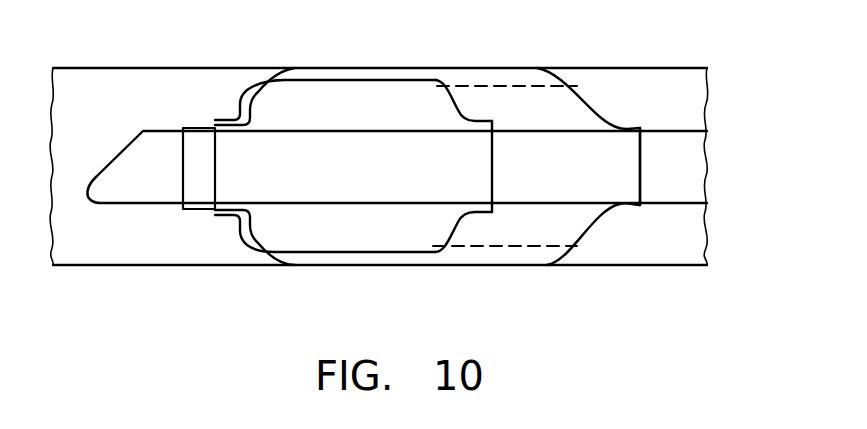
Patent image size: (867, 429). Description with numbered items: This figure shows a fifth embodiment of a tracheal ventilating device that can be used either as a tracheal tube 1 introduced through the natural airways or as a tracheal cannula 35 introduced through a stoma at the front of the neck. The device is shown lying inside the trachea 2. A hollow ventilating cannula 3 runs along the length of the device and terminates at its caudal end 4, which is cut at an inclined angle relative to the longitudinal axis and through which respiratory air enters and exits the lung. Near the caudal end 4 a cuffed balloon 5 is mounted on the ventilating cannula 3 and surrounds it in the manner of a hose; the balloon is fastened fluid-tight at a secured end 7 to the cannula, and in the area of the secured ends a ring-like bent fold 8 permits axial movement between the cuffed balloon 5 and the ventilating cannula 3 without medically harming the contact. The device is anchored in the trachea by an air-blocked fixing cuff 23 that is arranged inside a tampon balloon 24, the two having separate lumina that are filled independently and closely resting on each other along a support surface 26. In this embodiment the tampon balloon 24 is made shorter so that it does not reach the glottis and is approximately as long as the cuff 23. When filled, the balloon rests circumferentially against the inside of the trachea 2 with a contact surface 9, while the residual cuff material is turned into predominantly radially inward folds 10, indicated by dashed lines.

The tracheal tube 1 is at (663, 112).
The tracheal cannula 35 is at (635, 101).
The trachea 2 is at (380, 68).
The ventilating cannula 3 is at (680, 173).
The caudal end 4 is at (148, 192).
The cuffed balloon 5 is at (588, 142).
The tampon balloon 24 is at (564, 108).
The secured end 7 is at (195, 209).
The bent fold 8 is at (237, 114).
The contact surface 9 is at (326, 266).
The folds 10 is at (488, 76).
The cuff 23 is at (418, 237).
The support surface 26 is at (376, 254).